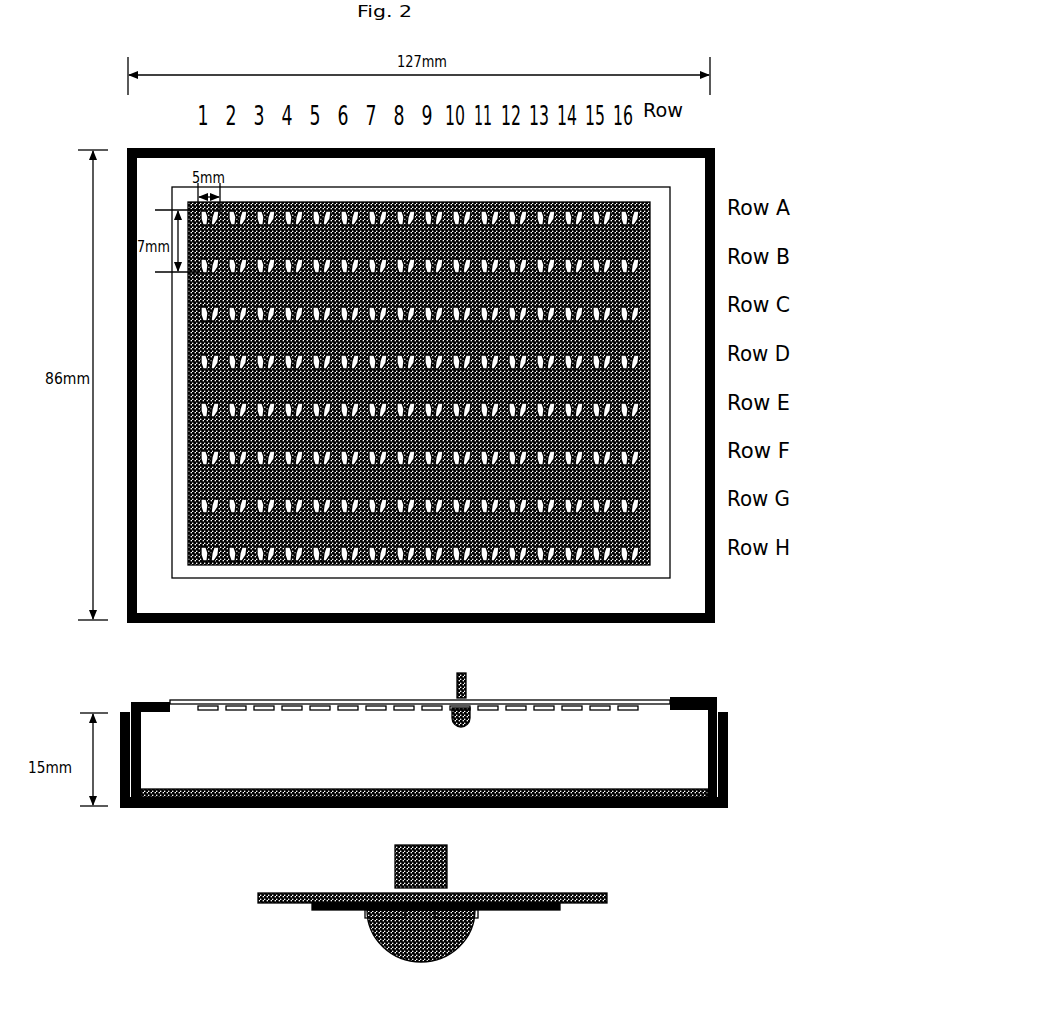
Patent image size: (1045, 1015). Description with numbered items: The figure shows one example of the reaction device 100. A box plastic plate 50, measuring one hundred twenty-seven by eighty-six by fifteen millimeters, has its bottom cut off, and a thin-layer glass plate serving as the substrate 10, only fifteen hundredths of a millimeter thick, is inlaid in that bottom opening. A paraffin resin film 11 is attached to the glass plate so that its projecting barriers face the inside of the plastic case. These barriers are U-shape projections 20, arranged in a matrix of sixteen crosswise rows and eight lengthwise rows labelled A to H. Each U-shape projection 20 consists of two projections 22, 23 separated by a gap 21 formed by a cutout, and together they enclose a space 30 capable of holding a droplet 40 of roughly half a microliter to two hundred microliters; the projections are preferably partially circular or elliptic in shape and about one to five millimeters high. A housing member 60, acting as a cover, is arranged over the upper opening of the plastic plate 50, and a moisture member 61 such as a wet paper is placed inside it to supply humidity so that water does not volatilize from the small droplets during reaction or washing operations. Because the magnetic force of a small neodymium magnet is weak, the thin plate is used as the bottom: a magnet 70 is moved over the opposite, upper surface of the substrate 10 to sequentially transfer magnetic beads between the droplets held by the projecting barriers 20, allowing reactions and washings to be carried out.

The reaction device 100 is at (70, 385).
The substrate 10 is at (674, 202).
The resin film 11 is at (638, 236).
The U-shape projection 20 is at (203, 360).
The gap 21 is at (212, 418).
The projection 22 is at (212, 309).
The projection 23 is at (204, 319).
The space 30 is at (240, 551).
The droplet 40 is at (450, 729).
The plastic plate 50 is at (703, 627).
The housing member 60 is at (728, 755).
The moisture member 61 is at (205, 772).
The magnet 70 is at (470, 683).